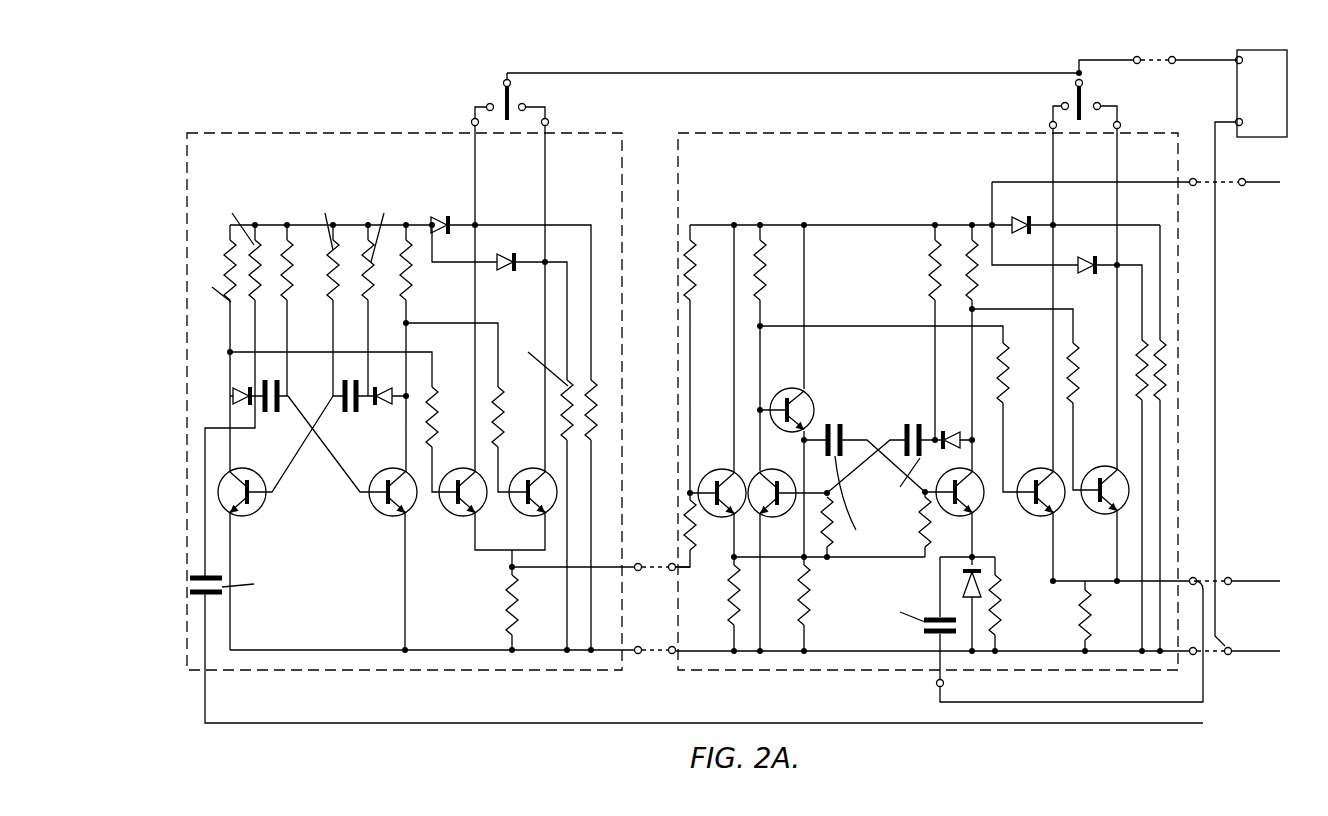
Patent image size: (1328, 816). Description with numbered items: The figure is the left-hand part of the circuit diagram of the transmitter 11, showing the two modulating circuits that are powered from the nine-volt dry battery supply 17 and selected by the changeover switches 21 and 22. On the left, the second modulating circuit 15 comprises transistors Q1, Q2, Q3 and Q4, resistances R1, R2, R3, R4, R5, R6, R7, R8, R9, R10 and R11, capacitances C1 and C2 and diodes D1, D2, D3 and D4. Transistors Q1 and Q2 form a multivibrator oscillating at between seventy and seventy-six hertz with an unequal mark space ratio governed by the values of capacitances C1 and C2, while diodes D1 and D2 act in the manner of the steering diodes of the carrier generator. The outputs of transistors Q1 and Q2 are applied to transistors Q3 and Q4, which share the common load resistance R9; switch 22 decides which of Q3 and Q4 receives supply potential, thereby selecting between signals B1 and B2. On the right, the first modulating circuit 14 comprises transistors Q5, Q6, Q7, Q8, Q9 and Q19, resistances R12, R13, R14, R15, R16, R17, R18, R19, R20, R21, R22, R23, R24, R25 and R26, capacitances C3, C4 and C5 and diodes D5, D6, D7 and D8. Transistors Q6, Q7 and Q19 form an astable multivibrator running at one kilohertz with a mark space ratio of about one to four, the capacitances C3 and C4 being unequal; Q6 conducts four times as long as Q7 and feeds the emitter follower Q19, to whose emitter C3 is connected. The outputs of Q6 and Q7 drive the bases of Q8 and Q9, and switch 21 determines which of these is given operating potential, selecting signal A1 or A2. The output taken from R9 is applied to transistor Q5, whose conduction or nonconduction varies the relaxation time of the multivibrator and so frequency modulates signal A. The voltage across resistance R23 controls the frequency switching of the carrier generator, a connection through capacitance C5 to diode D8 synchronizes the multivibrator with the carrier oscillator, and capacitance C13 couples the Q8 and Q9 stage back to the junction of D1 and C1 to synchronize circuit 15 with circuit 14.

The transmitter 11 is at (896, 62).
The first modulating circuit 14 is at (855, 133).
The second modulating circuit 15 is at (300, 133).
The battery supply 17 is at (1268, 97).
The changeover switch 21 is at (1083, 81).
The second changeover switch 22 is at (505, 82).
The resistance R1 is at (228, 255).
The resistance R2 is at (250, 290).
The resistance R3 is at (287, 255).
The resistance R4 is at (333, 296).
The resistance R5 is at (368, 258).
The resistance R6 is at (407, 250).
The resistance R7 is at (434, 388).
The resistance R8 is at (500, 448).
The common load resistance R9 is at (510, 632).
The resistance R10 is at (597, 446).
The resistance R11 is at (572, 442).
The resistance R12 is at (690, 247).
The resistance R13 is at (690, 553).
The resistance R14 is at (733, 607).
The resistance R15 is at (760, 247).
The resistance R16 is at (805, 620).
The resistance R17 is at (828, 505).
The resistance R18 is at (926, 517).
The resistance R19 is at (928, 272).
The resistance R20 is at (970, 258).
The resistance R21 is at (1000, 358).
The resistance R22 is at (990, 623).
The resistance R23 is at (1080, 603).
The resistance R24 is at (1075, 407).
The resistance R25 is at (1146, 338).
The resistance R26 is at (1166, 368).
The capacitance C1 is at (265, 408).
The capacitance C2 is at (343, 392).
The capacitance C3 is at (830, 422).
The capacitance C4 is at (912, 424).
The capacitance C5 is at (930, 637).
The capacitance C13 is at (220, 598).
The diode D1 is at (238, 392).
The diode D2 is at (392, 386).
The diode D3 is at (450, 218).
The diode D4 is at (503, 270).
The diode D5 is at (1020, 218).
The diode D6 is at (1088, 256).
The diode D7 is at (950, 430).
The diode D8 is at (983, 569).
The transistor Q1 is at (250, 512).
The transistor Q2 is at (378, 512).
The transistor Q3 is at (452, 512).
The transistor Q4 is at (520, 512).
The transistor Q5 is at (718, 470).
The transistor Q6 is at (772, 468).
The transistor Q7 is at (983, 512).
The transistor Q8 is at (1056, 518).
The transistor Q9 is at (1092, 512).
The transistor Q19 is at (790, 388).